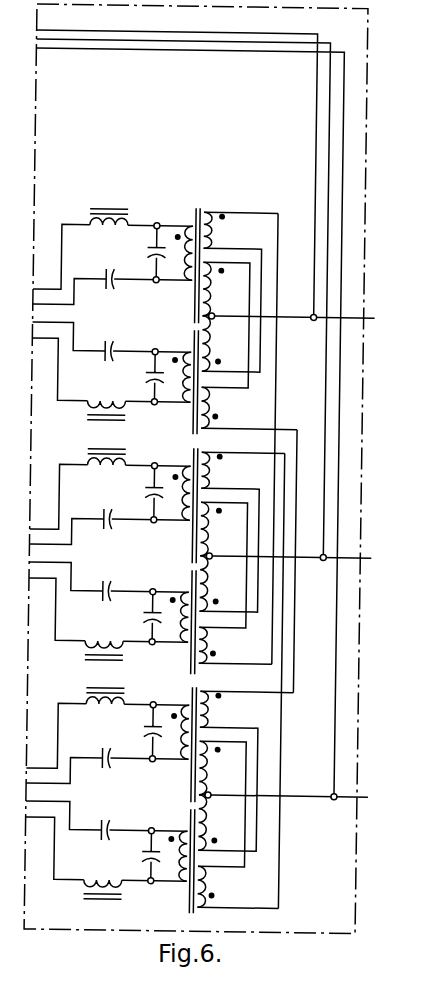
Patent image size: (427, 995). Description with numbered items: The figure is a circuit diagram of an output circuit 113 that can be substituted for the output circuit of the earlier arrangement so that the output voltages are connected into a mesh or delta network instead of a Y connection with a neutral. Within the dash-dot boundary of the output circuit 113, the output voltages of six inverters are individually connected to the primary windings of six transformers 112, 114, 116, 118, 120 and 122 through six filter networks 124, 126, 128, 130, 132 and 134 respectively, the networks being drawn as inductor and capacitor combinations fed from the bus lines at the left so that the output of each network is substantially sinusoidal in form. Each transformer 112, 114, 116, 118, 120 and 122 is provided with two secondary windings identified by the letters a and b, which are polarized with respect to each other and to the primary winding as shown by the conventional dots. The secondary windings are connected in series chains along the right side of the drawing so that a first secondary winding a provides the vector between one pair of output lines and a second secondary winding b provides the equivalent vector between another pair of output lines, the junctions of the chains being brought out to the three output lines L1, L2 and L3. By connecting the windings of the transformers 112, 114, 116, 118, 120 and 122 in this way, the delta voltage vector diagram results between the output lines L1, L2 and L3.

The transformer 112 is at (197, 341).
The transformer 114 is at (197, 292).
The transformer 116 is at (211, 615).
The transformer 118 is at (218, 538).
The transformer 120 is at (212, 854).
The transformer 122 is at (219, 777).
The filter network 124 is at (122, 389).
The filter network 126 is at (126, 252).
The filter network 128 is at (108, 611).
The filter network 130 is at (109, 497).
The filter network 132 is at (106, 850).
The filter network 134 is at (107, 736).
The output circuit 113 is at (368, 872).
The output line L1 is at (379, 314).
The output line L2 is at (305, 550).
The output line L3 is at (303, 789).